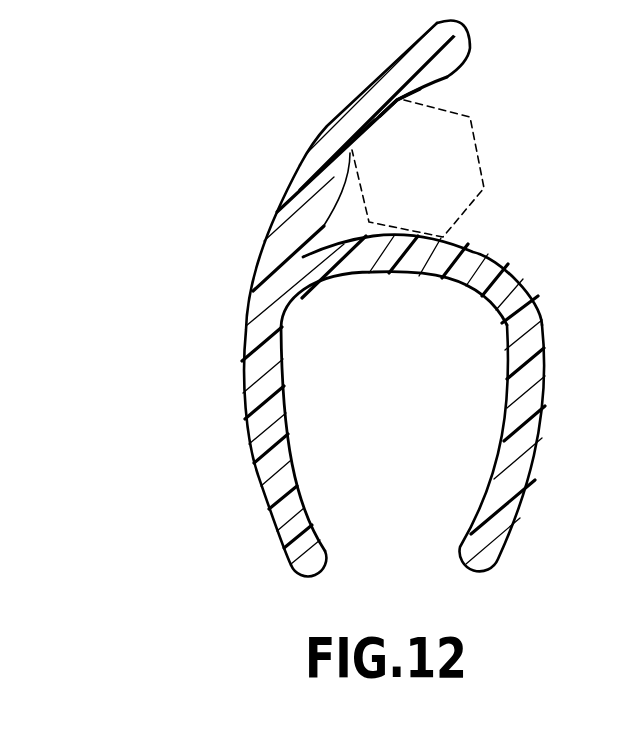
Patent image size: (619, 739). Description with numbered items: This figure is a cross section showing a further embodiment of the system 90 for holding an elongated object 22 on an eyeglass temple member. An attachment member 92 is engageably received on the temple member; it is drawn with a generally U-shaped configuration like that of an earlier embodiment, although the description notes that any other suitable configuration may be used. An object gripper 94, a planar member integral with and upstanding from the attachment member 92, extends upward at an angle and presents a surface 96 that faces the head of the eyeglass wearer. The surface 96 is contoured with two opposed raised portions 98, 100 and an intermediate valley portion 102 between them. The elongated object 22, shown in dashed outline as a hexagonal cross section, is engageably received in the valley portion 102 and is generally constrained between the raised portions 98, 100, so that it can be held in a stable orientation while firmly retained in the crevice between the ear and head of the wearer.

The clip 90 is at (190, 438).
The attachment member 92 is at (528, 432).
The object gripper 94 is at (405, 72).
The surface 96 is at (391, 111).
The raised portion 98 is at (456, 78).
The raised portion 100 is at (335, 215).
The intermediate valley portion 102 is at (360, 137).
The elongated object 22 is at (481, 147).